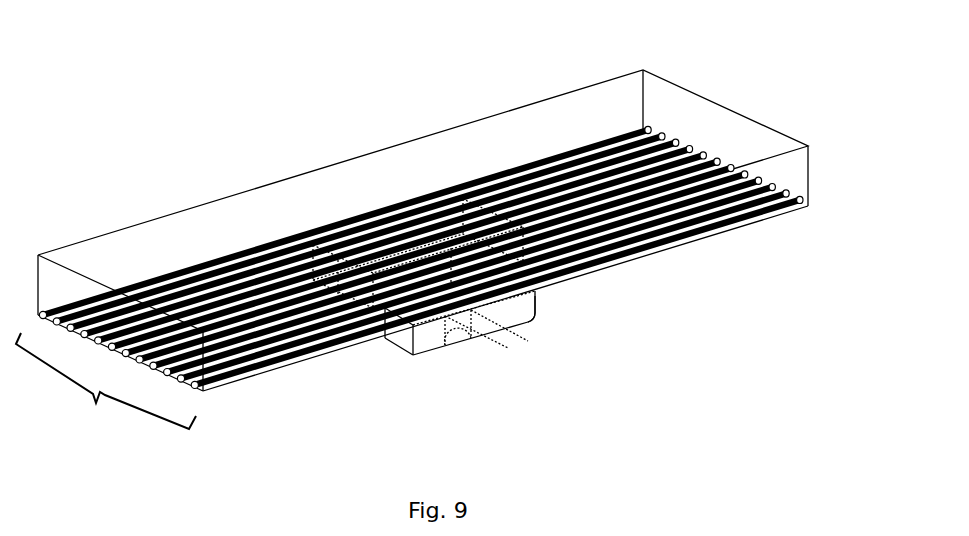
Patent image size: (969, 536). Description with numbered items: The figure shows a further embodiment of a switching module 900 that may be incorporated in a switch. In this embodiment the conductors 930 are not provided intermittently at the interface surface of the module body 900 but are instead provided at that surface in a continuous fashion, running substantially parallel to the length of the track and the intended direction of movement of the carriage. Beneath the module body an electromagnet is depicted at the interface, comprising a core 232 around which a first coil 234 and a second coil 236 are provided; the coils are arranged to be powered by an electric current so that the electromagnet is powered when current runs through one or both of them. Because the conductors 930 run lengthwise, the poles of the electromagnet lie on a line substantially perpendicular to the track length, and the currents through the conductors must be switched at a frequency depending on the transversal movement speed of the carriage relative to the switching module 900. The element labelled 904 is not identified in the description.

The switching module 900 is at (160, 141).
The tubes 904 is at (370, 167).
The first coil 234 is at (302, 257).
The core 232 is at (422, 337).
The second coil 236 is at (520, 313).
The conductors 930 is at (106, 383).